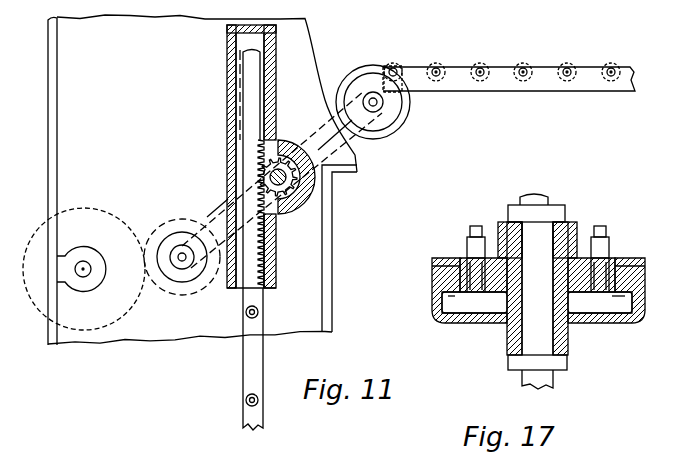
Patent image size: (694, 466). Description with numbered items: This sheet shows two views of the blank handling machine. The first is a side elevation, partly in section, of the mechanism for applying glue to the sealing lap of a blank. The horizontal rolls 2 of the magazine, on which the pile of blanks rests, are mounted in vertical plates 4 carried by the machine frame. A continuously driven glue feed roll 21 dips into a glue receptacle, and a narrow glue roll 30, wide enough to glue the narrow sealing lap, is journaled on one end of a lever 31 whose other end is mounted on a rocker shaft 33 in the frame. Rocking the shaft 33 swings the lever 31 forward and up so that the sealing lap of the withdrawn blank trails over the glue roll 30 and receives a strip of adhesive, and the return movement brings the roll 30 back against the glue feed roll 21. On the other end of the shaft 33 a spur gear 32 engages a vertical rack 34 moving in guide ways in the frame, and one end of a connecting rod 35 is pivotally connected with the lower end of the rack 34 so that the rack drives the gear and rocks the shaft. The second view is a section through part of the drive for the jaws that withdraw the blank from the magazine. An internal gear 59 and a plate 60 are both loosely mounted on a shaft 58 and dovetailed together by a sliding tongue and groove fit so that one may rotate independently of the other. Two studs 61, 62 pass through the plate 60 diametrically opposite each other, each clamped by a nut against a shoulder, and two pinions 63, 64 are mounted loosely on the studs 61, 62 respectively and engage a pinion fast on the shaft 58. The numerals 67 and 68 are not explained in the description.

In FIG. 11, the horizontal rolls 2 is at (509, 78).
In FIG. 11, the vertical plates 4 is at (495, 85).
In FIG. 11, the glue feed roll 21 is at (82, 210).
In FIG. 11, the narrow glue roll 30 is at (170, 222).
In FIG. 11, the lever 31 is at (212, 216).
In FIG. 11, the spur gear 32 is at (296, 192).
In FIG. 11, the rocker shaft 33 is at (282, 187).
In FIG. 11, the vertical rack 34 is at (250, 157).
In FIG. 11, the connecting rod 35 is at (243, 417).
In FIG. 17, the shaft 58 is at (545, 199).
In FIG. 17, the internal gear 59 is at (440, 308).
In FIG. 17, the plate 60 is at (447, 262).
In FIG. 17, the stud 61 is at (474, 236).
In FIG. 17, the stud 62 is at (604, 238).
In FIG. 17, the pinion 63 is at (458, 305).
In FIG. 17, the pinion 64 is at (616, 296).
In FIG. 17, the hub 67 is at (572, 238).
In FIG. 17, the tube 68 is at (521, 239).